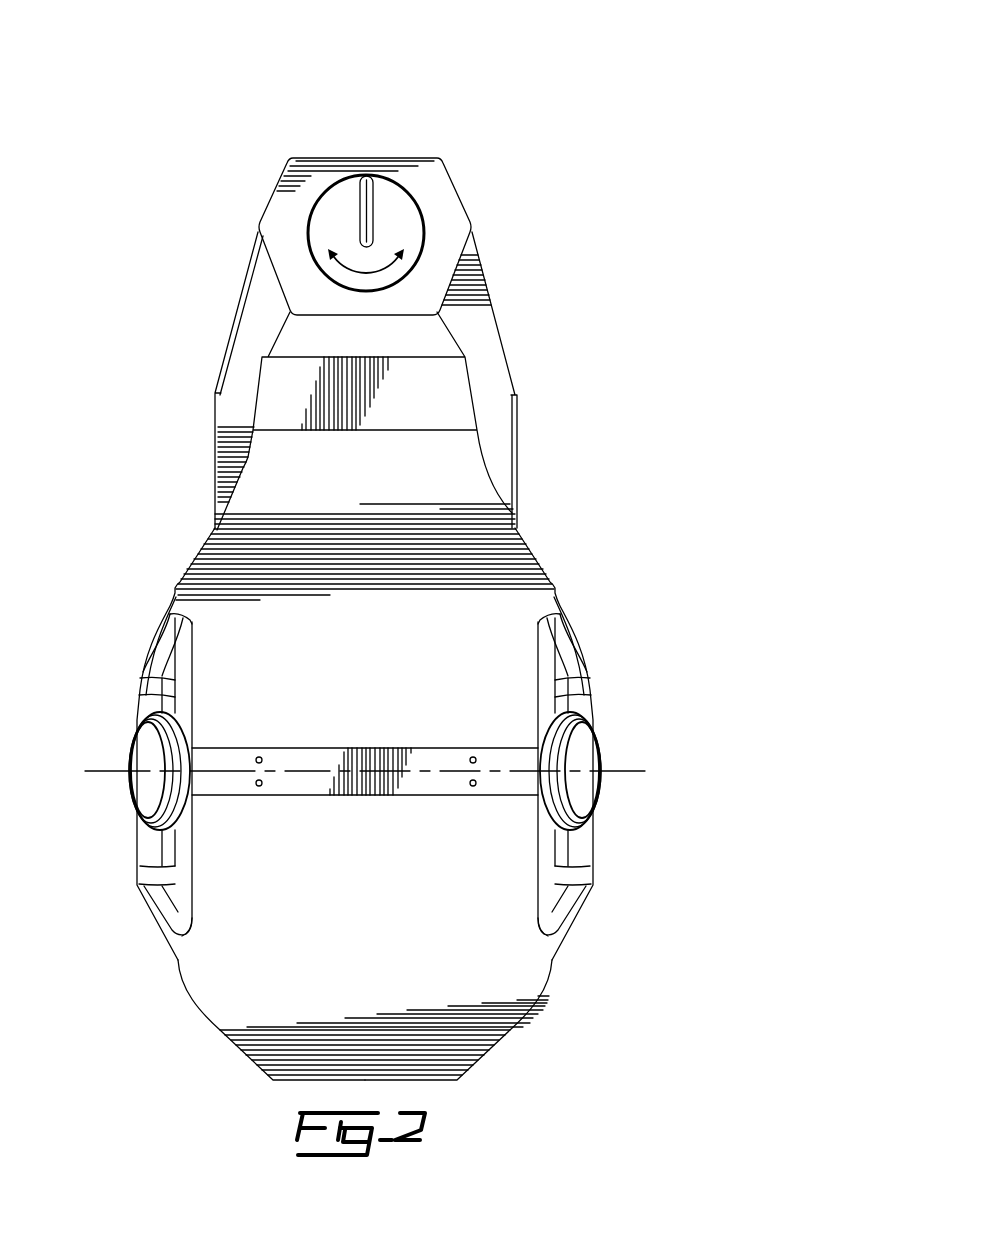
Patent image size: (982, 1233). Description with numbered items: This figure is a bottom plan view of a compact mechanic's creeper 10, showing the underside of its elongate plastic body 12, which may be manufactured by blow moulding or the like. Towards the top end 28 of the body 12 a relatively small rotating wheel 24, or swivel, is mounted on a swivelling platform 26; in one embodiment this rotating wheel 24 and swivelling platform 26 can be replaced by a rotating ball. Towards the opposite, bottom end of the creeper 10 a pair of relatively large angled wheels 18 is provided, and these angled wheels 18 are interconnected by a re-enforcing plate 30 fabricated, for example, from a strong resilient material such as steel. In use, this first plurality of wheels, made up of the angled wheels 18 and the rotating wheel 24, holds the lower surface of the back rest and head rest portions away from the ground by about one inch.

The creeper 10 is at (492, 110).
The body 12 is at (533, 557).
The angled wheels 18 is at (148, 793).
The rotating wheel 24 is at (370, 198).
The swivelling platform 26 is at (327, 243).
The top end 28 is at (362, 157).
The re-enforcing plate 30 is at (313, 787).